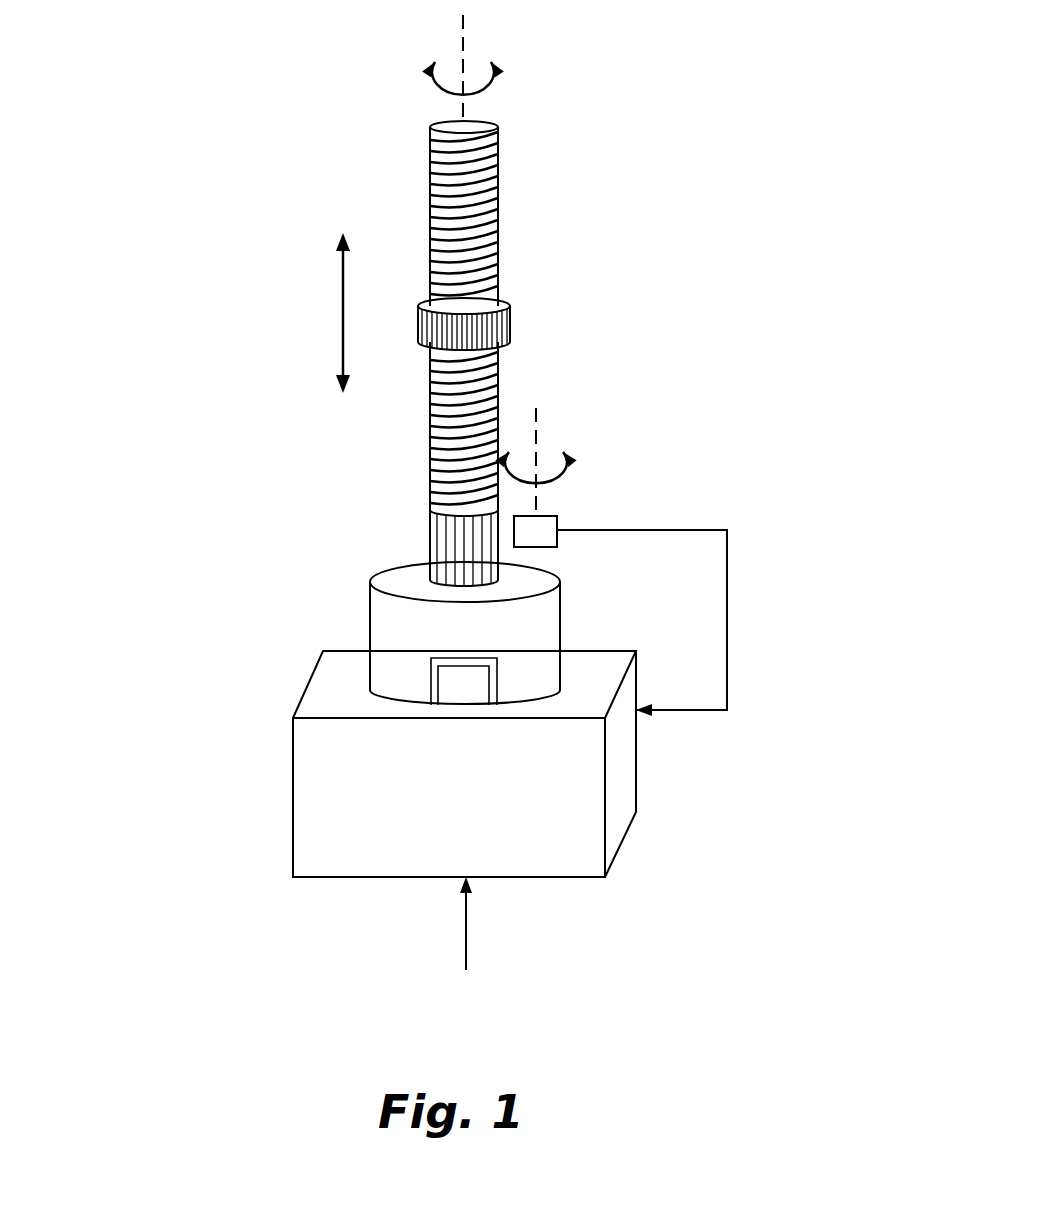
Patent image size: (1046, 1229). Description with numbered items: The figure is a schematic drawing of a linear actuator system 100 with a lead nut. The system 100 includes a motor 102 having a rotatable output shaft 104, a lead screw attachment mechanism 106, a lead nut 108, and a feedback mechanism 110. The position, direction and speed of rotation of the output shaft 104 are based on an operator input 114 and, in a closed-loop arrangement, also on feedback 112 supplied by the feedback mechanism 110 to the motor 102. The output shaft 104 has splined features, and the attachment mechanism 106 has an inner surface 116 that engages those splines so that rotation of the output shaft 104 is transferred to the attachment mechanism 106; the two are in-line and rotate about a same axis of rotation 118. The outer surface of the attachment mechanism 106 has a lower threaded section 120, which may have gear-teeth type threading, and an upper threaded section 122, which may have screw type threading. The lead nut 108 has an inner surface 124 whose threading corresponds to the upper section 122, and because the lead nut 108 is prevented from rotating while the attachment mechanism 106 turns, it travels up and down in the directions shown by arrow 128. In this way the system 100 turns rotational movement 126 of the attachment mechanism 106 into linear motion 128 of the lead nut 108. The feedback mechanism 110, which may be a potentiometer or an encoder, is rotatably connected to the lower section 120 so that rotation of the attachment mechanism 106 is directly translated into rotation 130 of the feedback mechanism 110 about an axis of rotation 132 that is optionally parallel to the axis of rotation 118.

The linear actuator system 100 is at (175, 930).
The motor 102 is at (300, 813).
The output shaft 104 is at (447, 688).
The lead screw attachment mechanism 106 is at (500, 222).
The lead nut 108 is at (420, 323).
The feedback mechanism 110 is at (545, 516).
The feedback 112 is at (712, 530).
The operator input 114 is at (462, 935).
The inner surface 116 is at (440, 677).
The axis of rotation 118 is at (466, 31).
The lower threaded section 120 is at (430, 540).
The upper threaded section 122 is at (498, 182).
The inner surface 124 is at (505, 300).
The rotational movement 126 is at (433, 82).
The linear motion 128 is at (340, 318).
The rotation 130 is at (570, 462).
The axis of rotation 132 is at (537, 415).